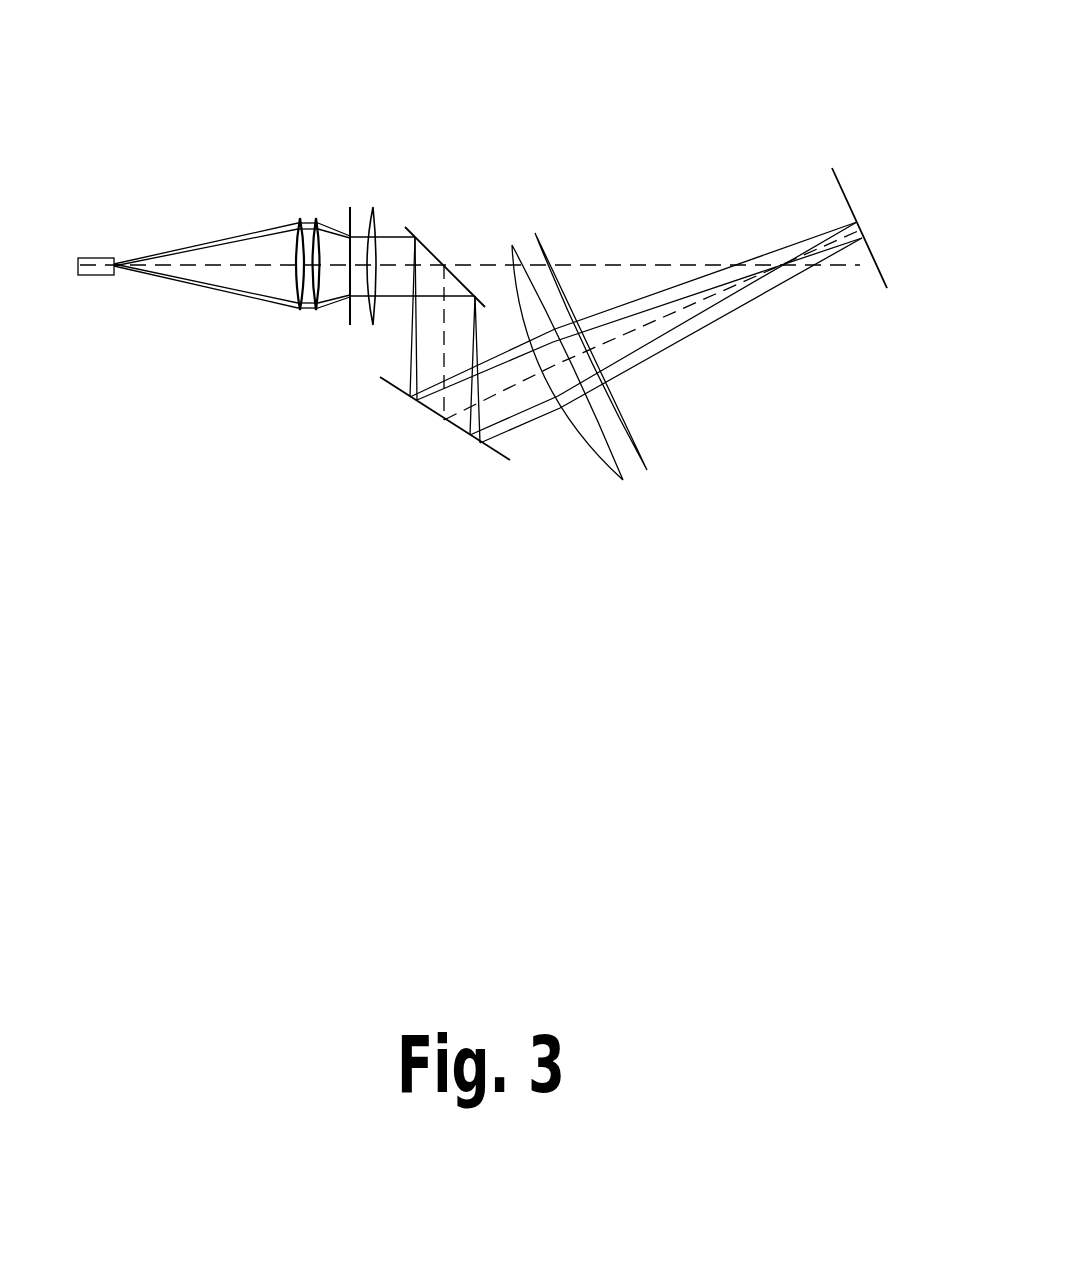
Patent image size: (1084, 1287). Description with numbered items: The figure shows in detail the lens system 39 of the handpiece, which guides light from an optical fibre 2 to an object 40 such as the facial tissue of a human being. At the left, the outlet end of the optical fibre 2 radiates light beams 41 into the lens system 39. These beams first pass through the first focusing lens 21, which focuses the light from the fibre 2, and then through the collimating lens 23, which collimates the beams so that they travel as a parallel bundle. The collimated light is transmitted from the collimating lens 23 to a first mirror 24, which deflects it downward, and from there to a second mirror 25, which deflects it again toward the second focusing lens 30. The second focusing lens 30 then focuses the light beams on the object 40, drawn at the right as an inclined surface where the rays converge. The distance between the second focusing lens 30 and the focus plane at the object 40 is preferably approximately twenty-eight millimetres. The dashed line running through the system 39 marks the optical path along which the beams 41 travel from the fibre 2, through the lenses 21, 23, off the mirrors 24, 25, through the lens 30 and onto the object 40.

The optical fibre 2 is at (92, 278).
The first focusing lens 21 is at (298, 211).
The collimating lens 23 is at (362, 205).
The first mirror 24 is at (423, 246).
The second mirror 25 is at (460, 437).
The second focusing lens 30 is at (638, 477).
The lens system 39 is at (482, 72).
The object 40 is at (880, 265).
The light beam 41 is at (207, 289).